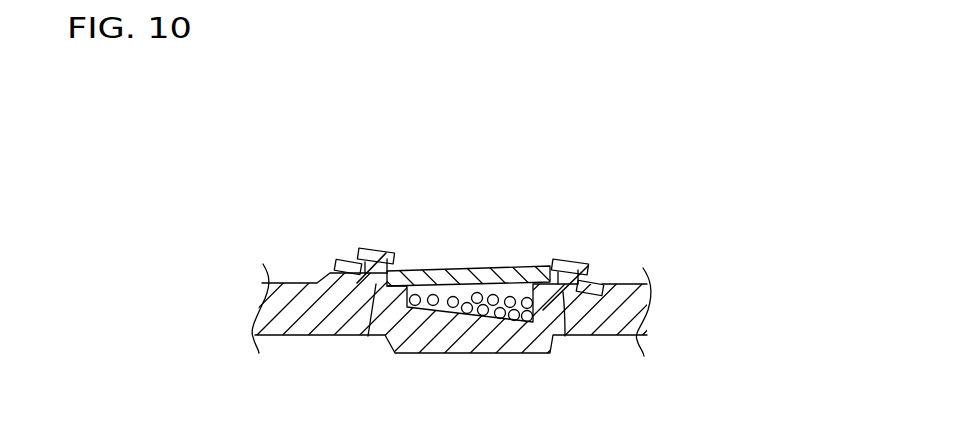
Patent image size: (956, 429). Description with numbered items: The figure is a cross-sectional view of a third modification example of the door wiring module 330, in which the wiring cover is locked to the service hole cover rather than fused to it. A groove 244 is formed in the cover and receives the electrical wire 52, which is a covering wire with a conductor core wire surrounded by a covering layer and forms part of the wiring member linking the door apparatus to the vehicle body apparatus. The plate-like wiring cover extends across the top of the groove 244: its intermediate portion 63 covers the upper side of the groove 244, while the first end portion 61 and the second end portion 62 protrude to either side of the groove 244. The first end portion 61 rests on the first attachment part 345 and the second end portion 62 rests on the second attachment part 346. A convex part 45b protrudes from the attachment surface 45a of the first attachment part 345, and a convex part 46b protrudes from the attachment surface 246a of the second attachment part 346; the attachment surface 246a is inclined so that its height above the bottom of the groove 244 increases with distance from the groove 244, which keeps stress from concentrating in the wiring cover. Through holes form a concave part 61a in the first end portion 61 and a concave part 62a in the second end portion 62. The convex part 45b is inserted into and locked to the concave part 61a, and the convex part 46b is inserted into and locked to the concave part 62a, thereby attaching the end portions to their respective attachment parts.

The door wiring module 330 is at (325, 162).
The groove 244 is at (473, 318).
The intermediate portion 63 is at (472, 270).
The electrical wire 52 is at (508, 296).
The attachment surface 246a is at (343, 260).
The second attachment part 346 is at (389, 249).
The convex part 46b is at (375, 250).
The second end portion 62 is at (395, 276).
The concave part 62a is at (368, 336).
The first attachment part 345 is at (583, 258).
The convex part 45b is at (566, 262).
The attachment surface 45a is at (597, 281).
The first end portion 61 is at (534, 270).
The concave part 61a is at (565, 336).